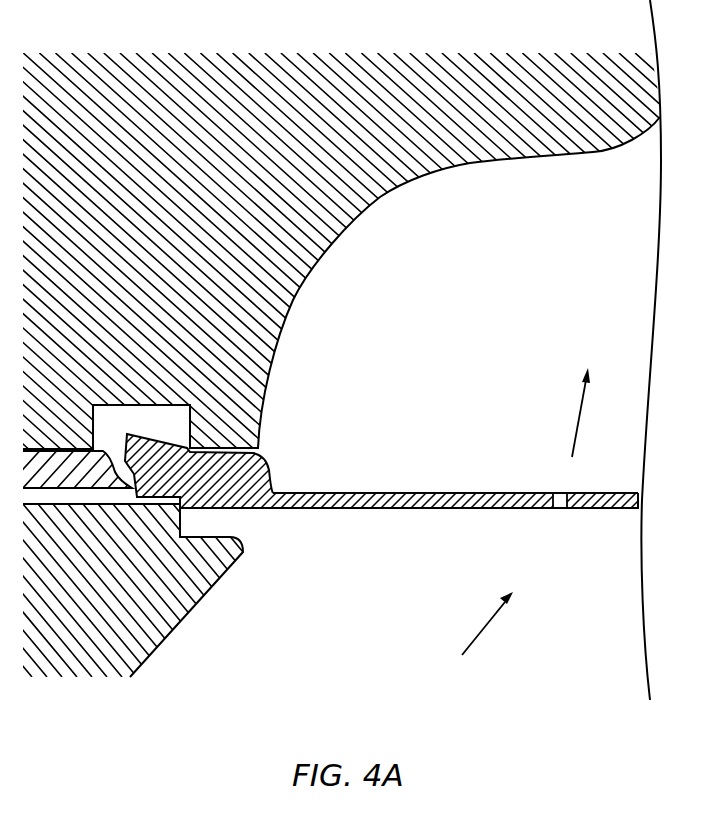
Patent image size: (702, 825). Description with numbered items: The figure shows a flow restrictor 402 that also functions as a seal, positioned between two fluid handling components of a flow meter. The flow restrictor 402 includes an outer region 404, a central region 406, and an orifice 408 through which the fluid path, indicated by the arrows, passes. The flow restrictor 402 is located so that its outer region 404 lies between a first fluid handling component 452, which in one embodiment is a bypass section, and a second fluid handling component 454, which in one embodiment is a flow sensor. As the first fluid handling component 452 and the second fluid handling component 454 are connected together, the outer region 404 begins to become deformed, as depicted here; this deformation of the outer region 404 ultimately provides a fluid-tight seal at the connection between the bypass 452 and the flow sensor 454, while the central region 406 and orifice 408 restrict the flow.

The second fluid handling component 454 is at (340, 234).
The outer region 404 is at (270, 462).
The flow restrictor 402 is at (458, 491).
The central region 406 is at (372, 494).
The orifice 408 is at (562, 510).
The first fluid handling component 452 is at (175, 614).